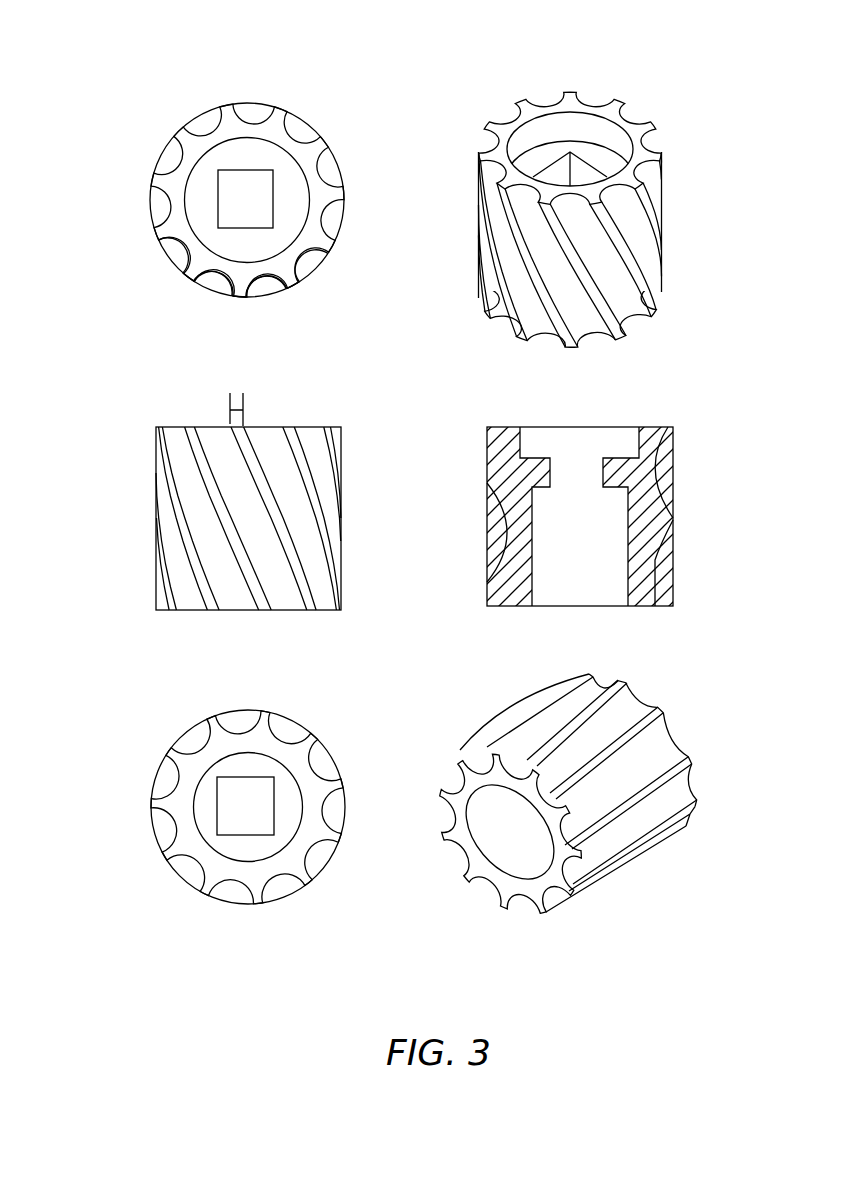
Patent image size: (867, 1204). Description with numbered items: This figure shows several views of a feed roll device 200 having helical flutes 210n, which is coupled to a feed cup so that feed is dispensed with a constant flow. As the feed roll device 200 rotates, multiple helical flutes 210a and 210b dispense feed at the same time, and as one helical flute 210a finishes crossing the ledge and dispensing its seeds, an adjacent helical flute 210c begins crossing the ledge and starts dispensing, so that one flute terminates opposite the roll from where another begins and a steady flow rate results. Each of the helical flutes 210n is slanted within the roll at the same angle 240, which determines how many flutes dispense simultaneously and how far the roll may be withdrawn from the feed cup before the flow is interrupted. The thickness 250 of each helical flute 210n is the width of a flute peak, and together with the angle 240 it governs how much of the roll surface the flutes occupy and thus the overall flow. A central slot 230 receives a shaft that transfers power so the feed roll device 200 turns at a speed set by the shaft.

The feed roll device 200 is at (178, 140).
The helical flute 210a is at (196, 268).
The helical flute 210b is at (240, 287).
The helical flute 210c is at (293, 283).
The helical flutes 210n is at (568, 97).
The slot 230 is at (575, 447).
The angle 240 is at (227, 515).
The thickness 250 is at (242, 393).